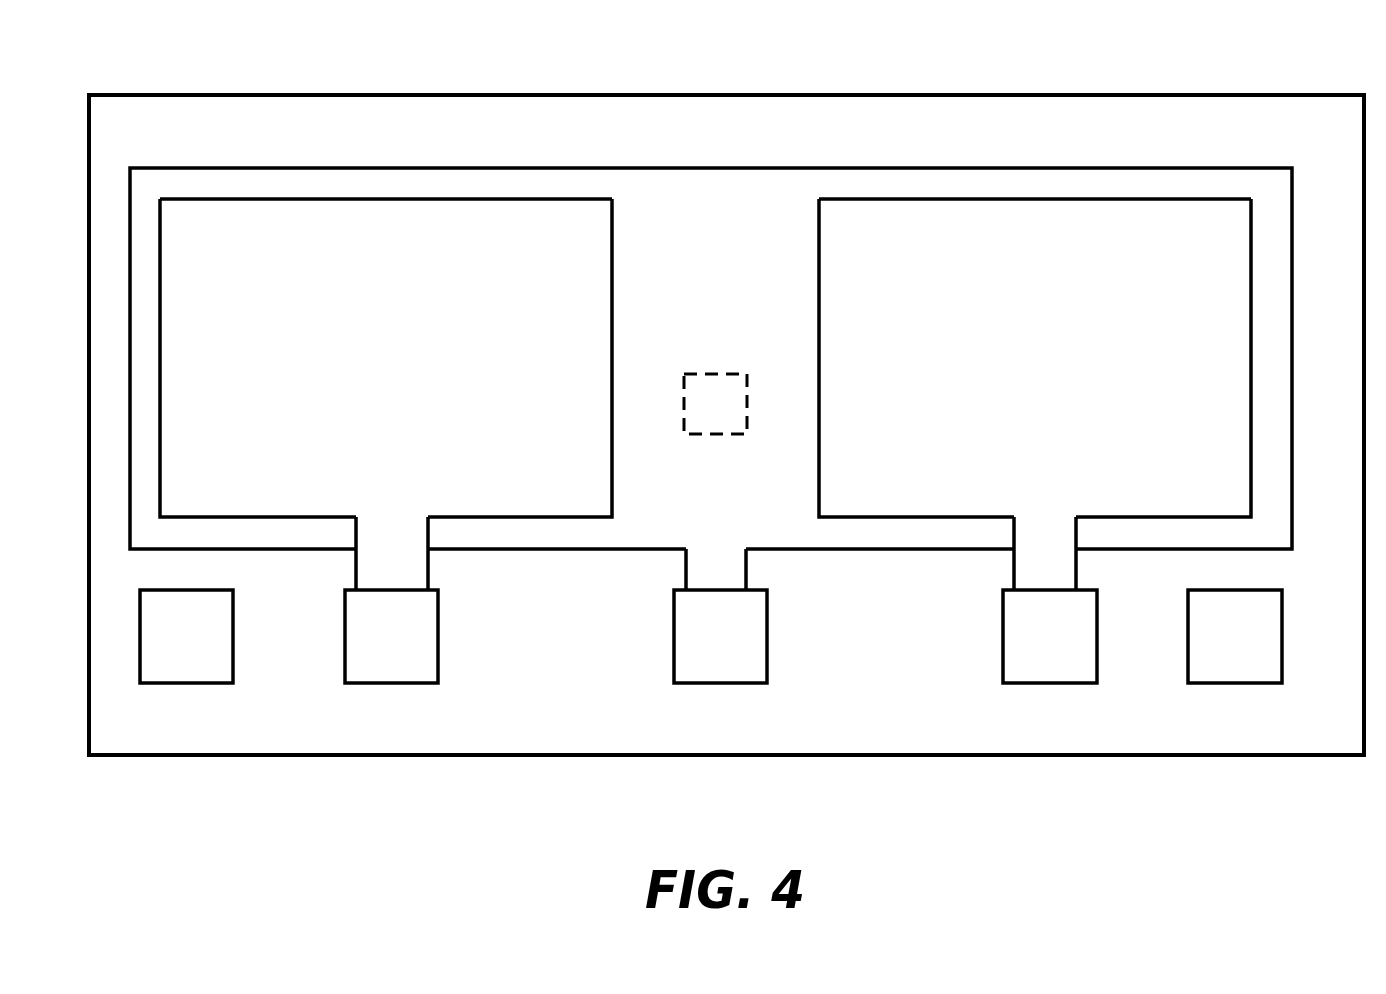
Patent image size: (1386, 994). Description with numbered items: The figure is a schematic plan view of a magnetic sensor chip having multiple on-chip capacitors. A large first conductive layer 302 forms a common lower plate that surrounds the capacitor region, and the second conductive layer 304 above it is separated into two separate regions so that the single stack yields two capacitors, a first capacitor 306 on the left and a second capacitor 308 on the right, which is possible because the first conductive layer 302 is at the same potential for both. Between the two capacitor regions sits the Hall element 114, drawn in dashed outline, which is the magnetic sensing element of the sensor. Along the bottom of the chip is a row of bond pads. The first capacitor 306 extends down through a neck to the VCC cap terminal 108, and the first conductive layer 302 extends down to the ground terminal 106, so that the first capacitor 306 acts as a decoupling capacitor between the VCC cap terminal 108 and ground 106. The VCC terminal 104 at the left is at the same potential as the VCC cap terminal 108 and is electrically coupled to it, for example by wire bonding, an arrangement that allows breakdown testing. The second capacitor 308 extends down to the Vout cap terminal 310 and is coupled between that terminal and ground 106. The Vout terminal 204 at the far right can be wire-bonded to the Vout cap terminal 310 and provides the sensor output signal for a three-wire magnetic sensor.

The VCC terminal 104 is at (204, 673).
The ground terminal 106 is at (706, 673).
The VCC cap terminal 108 is at (376, 673).
The Hall element 114 is at (700, 372).
The Vout terminal 204 is at (1215, 673).
The first conductive layer 302 is at (534, 166).
The second conductive layer 304 is at (352, 198).
The first capacitor 306 is at (412, 358).
The second capacitor 308 is at (1058, 358).
The Vout cap terminal 310 is at (1037, 673).